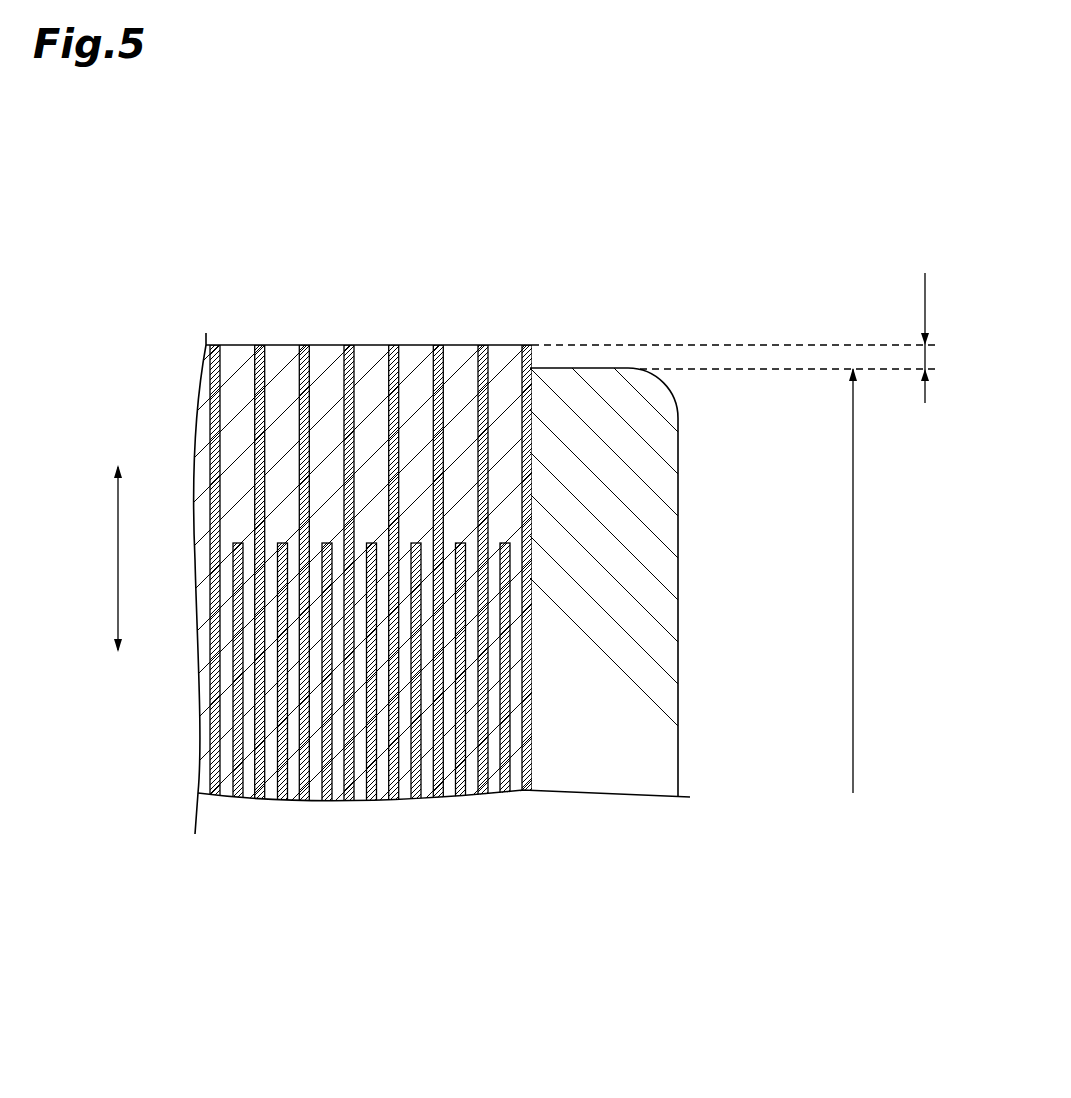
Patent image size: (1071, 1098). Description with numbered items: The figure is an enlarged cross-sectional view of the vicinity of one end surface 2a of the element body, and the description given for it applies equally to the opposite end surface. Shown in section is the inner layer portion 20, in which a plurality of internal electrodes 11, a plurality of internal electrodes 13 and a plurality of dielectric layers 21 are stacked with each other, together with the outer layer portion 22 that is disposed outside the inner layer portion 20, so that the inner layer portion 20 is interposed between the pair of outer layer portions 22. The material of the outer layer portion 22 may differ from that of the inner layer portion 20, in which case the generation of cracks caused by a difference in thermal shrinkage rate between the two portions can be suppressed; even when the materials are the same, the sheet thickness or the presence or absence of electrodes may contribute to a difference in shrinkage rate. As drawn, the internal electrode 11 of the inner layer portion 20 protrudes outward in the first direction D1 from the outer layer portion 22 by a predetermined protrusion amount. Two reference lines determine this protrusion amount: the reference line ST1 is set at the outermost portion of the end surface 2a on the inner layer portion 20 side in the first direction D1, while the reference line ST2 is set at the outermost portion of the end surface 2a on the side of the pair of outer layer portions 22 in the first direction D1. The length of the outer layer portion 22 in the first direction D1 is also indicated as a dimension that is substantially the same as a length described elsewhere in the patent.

The inner layer portion 20 is at (238, 327).
The internal electrode 11 is at (258, 345).
The internal electrode 13 is at (418, 800).
The dielectric layer 21 is at (272, 775).
The end surface 2a is at (457, 345).
The outer layer portion 22 is at (597, 318).
The reference line ST1 is at (783, 345).
The reference line ST2 is at (783, 370).
The first direction D1 is at (117, 528).